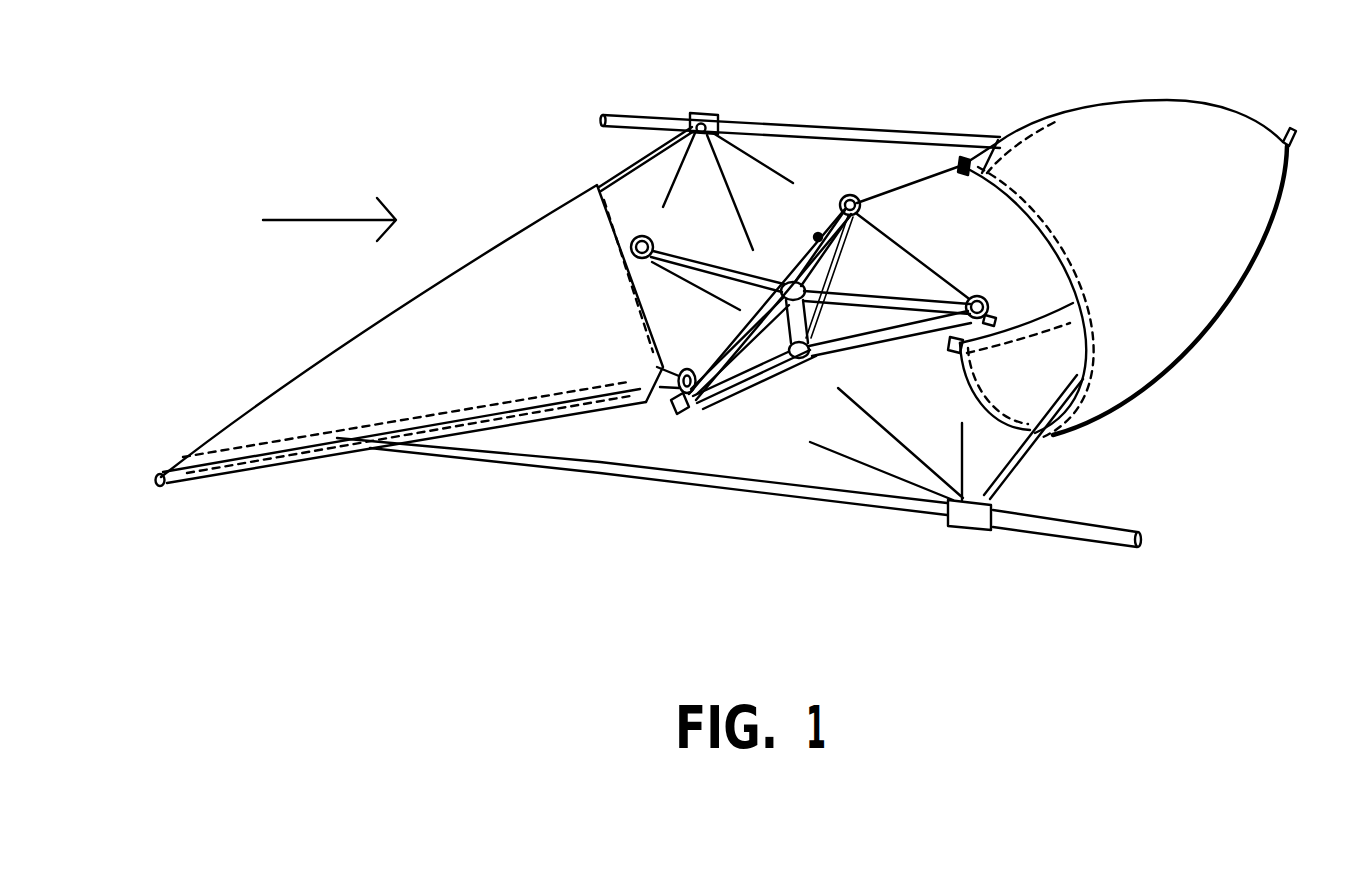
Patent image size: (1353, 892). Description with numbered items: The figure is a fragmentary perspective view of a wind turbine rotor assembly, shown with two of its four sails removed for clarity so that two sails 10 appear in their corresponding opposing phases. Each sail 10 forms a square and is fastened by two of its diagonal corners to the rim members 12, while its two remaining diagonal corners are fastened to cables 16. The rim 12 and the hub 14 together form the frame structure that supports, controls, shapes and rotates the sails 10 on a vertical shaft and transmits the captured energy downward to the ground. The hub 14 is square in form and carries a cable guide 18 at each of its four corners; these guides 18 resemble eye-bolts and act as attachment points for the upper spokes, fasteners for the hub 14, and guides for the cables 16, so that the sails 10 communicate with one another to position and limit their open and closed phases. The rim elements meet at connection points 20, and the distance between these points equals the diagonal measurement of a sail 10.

The sail 10 is at (412, 337).
The rim member 12 is at (850, 130).
The hub 14 is at (840, 333).
The cable 16 is at (788, 268).
The cable guide 18 is at (650, 237).
The rim element connection 20 is at (947, 520).